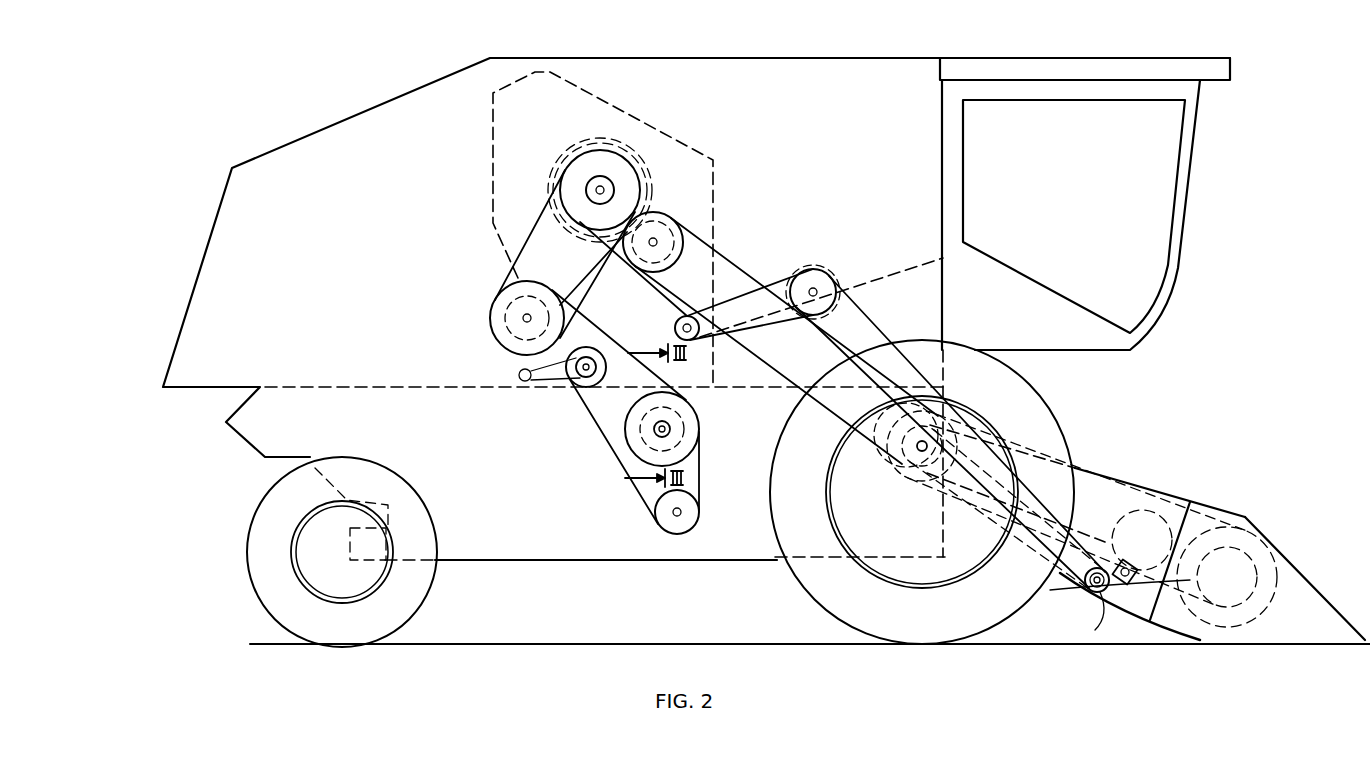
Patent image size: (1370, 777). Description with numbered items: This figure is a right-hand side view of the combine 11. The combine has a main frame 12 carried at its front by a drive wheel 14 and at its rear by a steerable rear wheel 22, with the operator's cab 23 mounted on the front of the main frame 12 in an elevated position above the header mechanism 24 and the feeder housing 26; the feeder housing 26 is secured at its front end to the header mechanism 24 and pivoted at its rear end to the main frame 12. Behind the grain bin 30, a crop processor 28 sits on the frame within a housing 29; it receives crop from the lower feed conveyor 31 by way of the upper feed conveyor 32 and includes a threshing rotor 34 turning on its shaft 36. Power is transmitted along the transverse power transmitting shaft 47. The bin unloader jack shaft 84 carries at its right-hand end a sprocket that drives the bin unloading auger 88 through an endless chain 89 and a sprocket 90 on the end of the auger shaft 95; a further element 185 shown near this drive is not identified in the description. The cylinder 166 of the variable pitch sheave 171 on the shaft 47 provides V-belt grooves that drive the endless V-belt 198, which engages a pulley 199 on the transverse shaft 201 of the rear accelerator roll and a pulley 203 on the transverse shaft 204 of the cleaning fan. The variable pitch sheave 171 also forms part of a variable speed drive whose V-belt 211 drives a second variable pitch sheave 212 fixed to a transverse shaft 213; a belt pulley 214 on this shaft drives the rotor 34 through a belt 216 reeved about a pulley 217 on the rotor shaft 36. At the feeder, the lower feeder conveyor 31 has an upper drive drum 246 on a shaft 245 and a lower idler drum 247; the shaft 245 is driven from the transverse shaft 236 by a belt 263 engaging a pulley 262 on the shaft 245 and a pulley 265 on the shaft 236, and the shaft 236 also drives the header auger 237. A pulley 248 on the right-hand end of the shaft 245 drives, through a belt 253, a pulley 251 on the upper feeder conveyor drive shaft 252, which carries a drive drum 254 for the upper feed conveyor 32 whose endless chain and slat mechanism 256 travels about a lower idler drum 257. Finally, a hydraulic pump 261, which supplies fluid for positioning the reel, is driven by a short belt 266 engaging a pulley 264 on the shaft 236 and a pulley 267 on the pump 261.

The combine 11 is at (1105, 410).
The main frame 12 is at (570, 545).
The drive wheel 14 is at (800, 590).
The steerable rear wheel 22 is at (410, 598).
The operator's station or cab 23 is at (1167, 285).
The header mechanism 24 is at (1310, 580).
The feeder housing 26 is at (1140, 480).
The crop processor 28 is at (565, 165).
The housing 29 is at (490, 122).
The grain bin 30 is at (862, 70).
The lower feed conveyor 31 is at (1105, 475).
The upper feed conveyor 32 is at (726, 266).
The threshing rotor 34 is at (578, 160).
The rotor shaft 36 is at (605, 188).
The power transmitting shaft 47 is at (668, 428).
The bin unloader jack shaft 84 is at (700, 342).
The bin unloading auger 88 is at (824, 268).
The endless chain 89 is at (776, 286).
The sprocket 90 is at (825, 285).
The auger shaft 95 is at (836, 300).
The cylinder 166 is at (640, 436).
The variable pitch sheave 171 is at (690, 443).
The idler pulley 185 is at (676, 328).
The endless V-belt 198 is at (630, 452).
The pulley 199 is at (576, 385).
The transverse shaft of rear accelerator roll 201 is at (590, 345).
The pulley 203 is at (656, 514).
The fan shaft 204 is at (680, 514).
The V-belt 211 is at (566, 393).
The variable pitch sheave 212 is at (492, 300).
The transverse shaft 213 is at (515, 325).
The belt pulley 214 is at (560, 288).
The belt 216 is at (560, 205).
The pulley 217 is at (606, 178).
The transverse shaft 236 is at (1060, 590).
The header auger 237 is at (1255, 520).
The shaft 245 is at (900, 462).
The upper drive drum 246 is at (900, 486).
The lower idler drum 247 is at (1180, 495).
The pulley 248 is at (910, 500).
The pulley 251 is at (585, 318).
The upper feeder conveyor drive shaft 252 is at (655, 240).
The belt 253 is at (880, 372).
The drive drum 254 is at (702, 220).
The endless chain and slat mechanism 256 is at (842, 342).
The lower idler drum 257 is at (842, 430).
The hydraulic pump 261 is at (1092, 520).
The pulley 262 is at (1000, 428).
The belt 263 is at (950, 580).
The pulley 264 is at (1088, 592).
The pulley 265 is at (1085, 582).
The short belt 266 is at (1117, 596).
The pulley 267 is at (1142, 540).